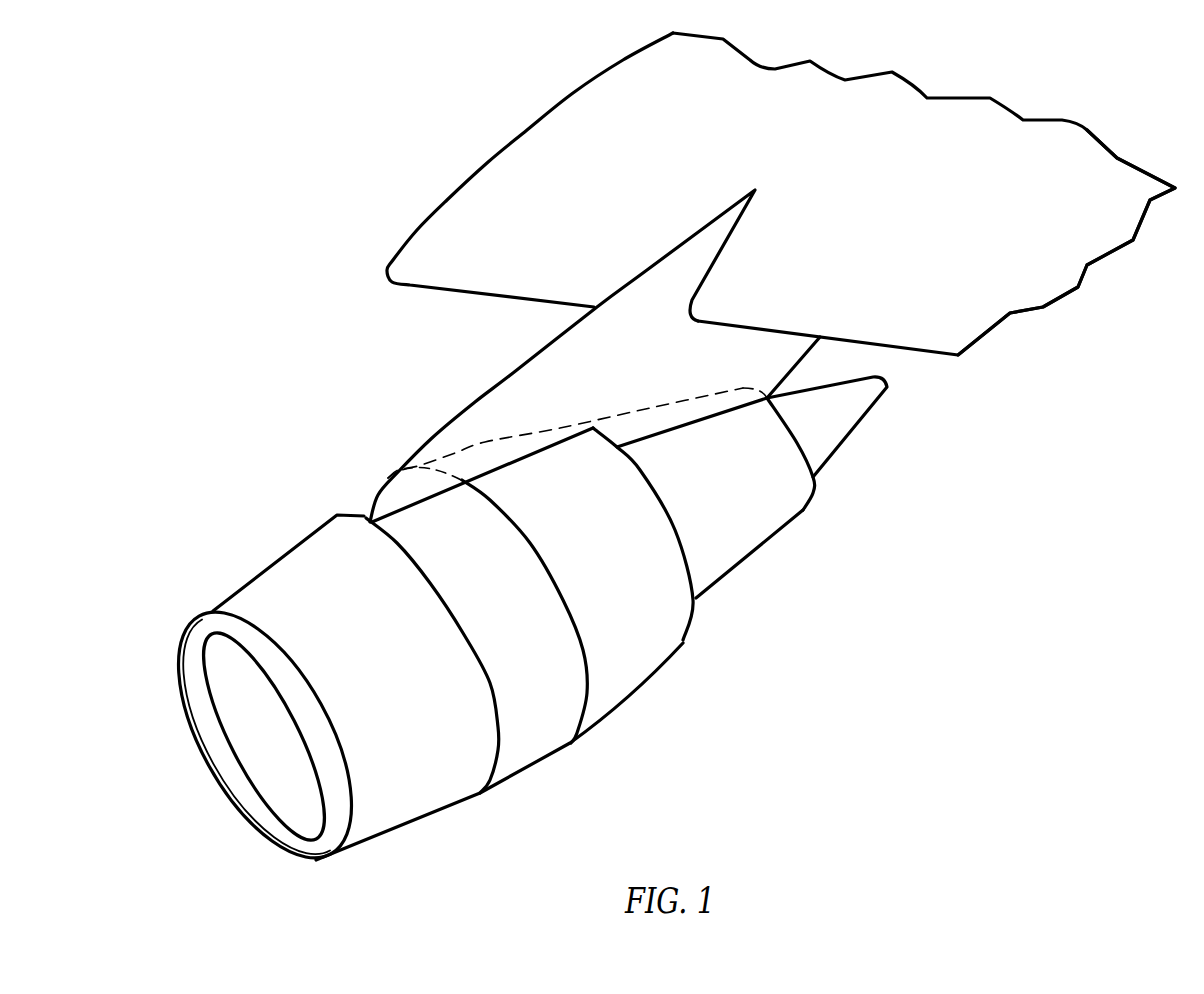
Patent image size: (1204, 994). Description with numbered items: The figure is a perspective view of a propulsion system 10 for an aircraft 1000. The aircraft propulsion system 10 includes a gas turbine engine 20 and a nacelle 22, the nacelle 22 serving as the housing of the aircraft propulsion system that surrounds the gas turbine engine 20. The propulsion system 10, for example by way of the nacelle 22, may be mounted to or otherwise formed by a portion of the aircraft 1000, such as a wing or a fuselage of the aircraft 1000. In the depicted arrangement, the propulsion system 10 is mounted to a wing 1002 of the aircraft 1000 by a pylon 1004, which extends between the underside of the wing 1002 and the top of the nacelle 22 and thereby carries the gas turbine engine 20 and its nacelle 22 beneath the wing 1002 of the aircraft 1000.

The propulsion system 10 is at (710, 672).
The gas turbine engine 20 is at (268, 737).
The nacelle 22 is at (253, 575).
The aircraft 1000 is at (497, 105).
The wing 1002 is at (988, 317).
The pylon 1004 is at (520, 381).